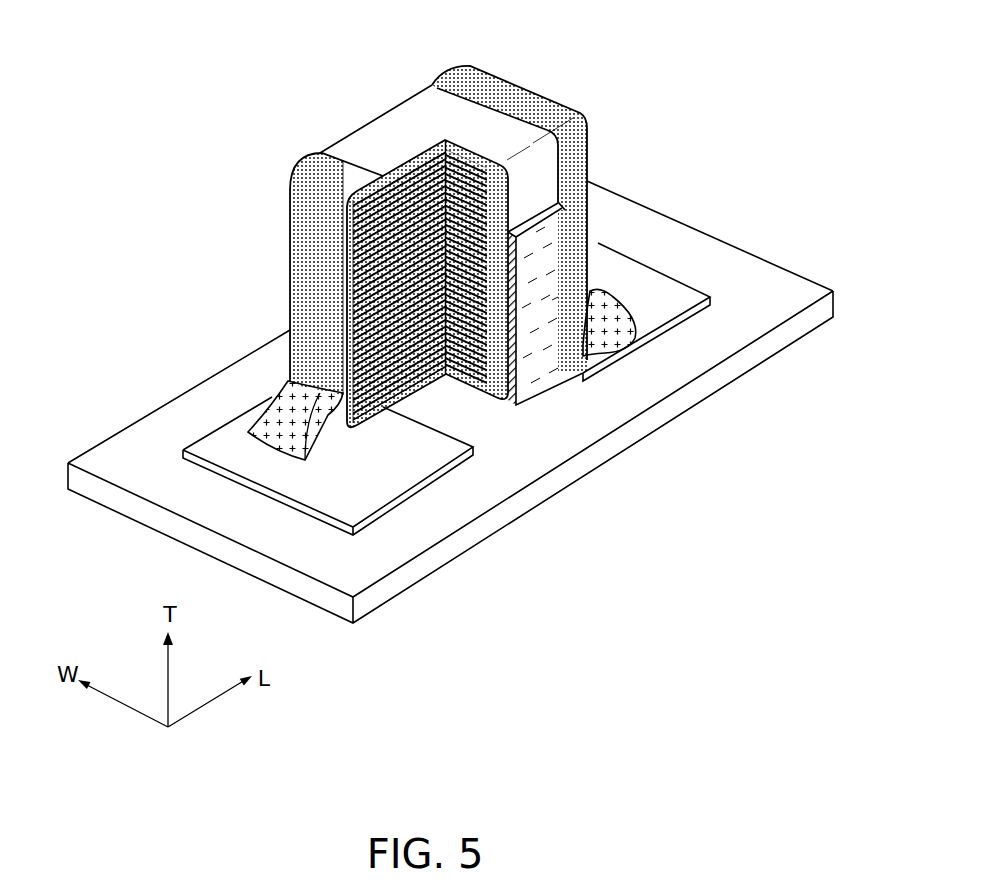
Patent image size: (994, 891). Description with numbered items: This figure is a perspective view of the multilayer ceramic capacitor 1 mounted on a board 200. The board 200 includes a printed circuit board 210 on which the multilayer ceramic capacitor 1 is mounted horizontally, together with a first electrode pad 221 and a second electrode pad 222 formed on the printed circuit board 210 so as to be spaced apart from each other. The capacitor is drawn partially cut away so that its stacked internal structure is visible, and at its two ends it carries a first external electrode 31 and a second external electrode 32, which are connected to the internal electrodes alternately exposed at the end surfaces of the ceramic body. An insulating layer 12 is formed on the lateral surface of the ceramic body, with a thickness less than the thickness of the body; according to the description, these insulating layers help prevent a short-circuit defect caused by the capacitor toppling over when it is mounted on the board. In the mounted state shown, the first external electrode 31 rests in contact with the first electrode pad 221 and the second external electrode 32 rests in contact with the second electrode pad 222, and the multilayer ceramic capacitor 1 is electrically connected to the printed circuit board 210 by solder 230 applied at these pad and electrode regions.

The multilayer ceramic capacitor 1 is at (463, 230).
The insulating layer 12 is at (560, 203).
The first external electrode 31 is at (312, 165).
The second external electrode 32 is at (461, 77).
The board 200 is at (450, 402).
The printed circuit board 210 is at (567, 472).
The first electrode pad 221 is at (385, 475).
The second electrode pad 222 is at (660, 293).
The solder 230 is at (282, 410).